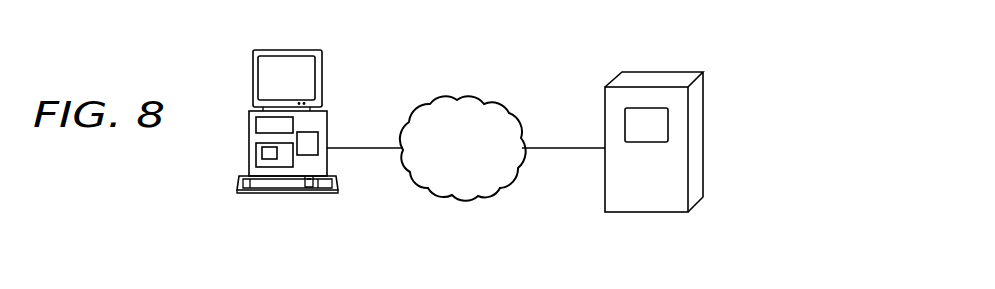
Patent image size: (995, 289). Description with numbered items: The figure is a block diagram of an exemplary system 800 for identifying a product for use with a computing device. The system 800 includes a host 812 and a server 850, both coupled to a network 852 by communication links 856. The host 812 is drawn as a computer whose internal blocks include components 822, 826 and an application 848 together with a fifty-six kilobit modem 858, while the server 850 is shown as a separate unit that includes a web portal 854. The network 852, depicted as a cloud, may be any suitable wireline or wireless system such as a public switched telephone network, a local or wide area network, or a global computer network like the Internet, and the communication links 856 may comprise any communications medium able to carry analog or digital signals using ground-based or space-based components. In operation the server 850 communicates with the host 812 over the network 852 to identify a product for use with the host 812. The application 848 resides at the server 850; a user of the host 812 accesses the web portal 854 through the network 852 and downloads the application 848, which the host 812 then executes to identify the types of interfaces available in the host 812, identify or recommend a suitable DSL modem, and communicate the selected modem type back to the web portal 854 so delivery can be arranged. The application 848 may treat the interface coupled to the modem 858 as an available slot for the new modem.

The system 800 is at (724, 55).
The host 812 is at (221, 64).
The processor 822 is at (256, 122).
The memory 826 is at (256, 146).
The application 848 is at (262, 153).
The server 850 is at (705, 133).
The network 852 is at (452, 100).
The web portal 854 is at (647, 142).
The communication links 856 is at (365, 150).
The 56K modem 858 is at (300, 133).